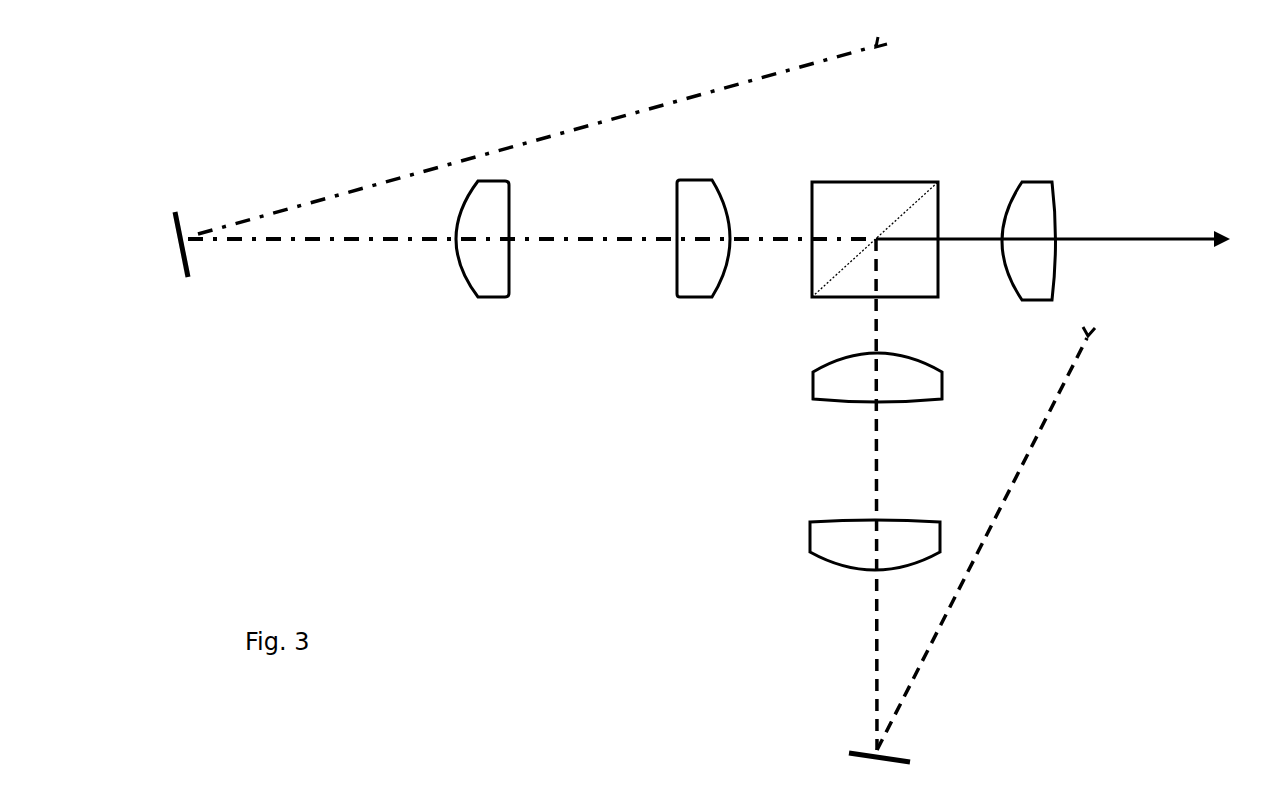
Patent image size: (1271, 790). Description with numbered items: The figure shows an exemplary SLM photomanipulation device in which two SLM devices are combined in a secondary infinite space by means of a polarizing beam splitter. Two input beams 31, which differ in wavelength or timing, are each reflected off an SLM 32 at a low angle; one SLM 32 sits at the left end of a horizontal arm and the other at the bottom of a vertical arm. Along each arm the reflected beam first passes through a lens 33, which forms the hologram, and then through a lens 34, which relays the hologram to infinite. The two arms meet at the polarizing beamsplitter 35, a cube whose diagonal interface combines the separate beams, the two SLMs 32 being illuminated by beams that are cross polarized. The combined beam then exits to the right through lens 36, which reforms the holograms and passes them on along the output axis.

The input beams 31 is at (678, 393).
The SLM 32 is at (538, 472).
The lens 33 is at (698, 375).
The lens 34 is at (809, 292).
The polarizing beamsplitter 35 is at (875, 226).
The lens 36 is at (1050, 227).